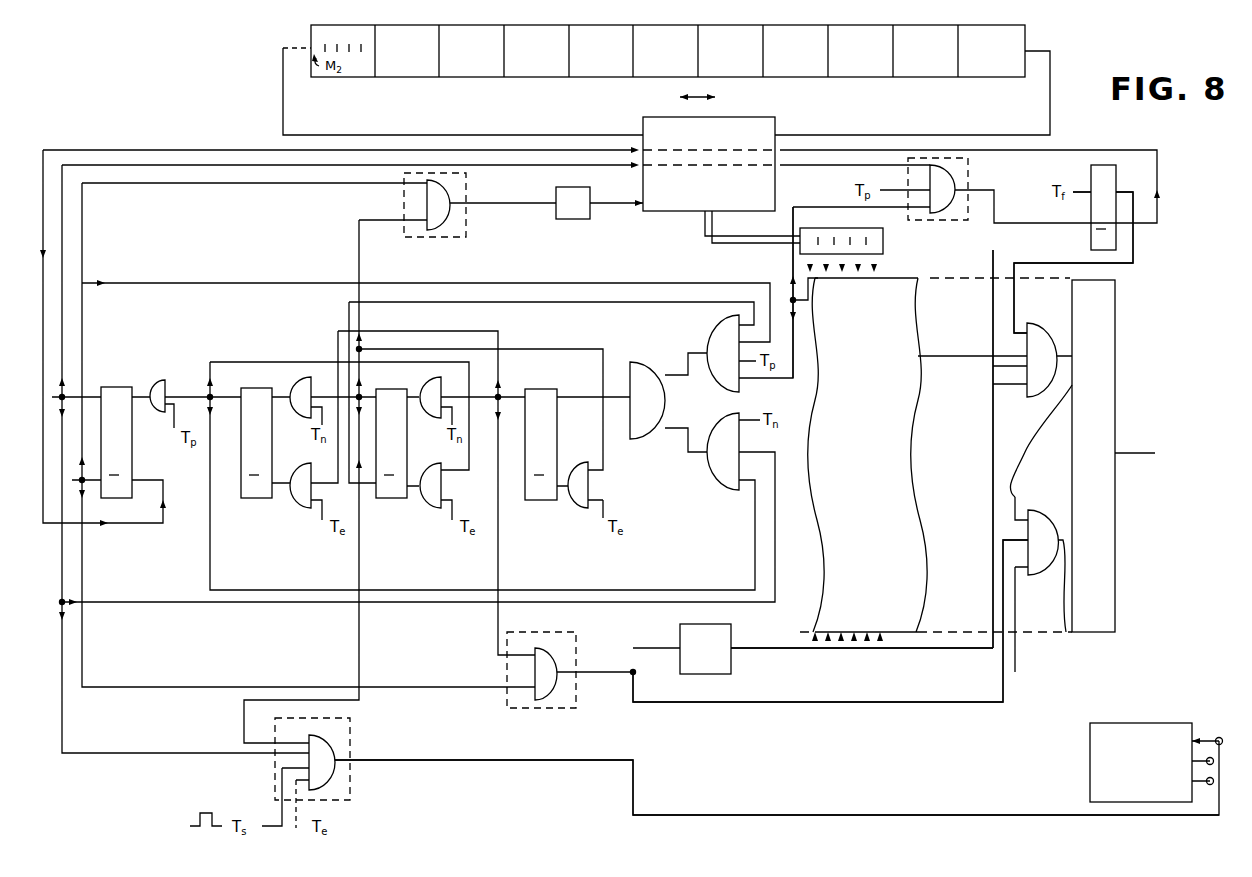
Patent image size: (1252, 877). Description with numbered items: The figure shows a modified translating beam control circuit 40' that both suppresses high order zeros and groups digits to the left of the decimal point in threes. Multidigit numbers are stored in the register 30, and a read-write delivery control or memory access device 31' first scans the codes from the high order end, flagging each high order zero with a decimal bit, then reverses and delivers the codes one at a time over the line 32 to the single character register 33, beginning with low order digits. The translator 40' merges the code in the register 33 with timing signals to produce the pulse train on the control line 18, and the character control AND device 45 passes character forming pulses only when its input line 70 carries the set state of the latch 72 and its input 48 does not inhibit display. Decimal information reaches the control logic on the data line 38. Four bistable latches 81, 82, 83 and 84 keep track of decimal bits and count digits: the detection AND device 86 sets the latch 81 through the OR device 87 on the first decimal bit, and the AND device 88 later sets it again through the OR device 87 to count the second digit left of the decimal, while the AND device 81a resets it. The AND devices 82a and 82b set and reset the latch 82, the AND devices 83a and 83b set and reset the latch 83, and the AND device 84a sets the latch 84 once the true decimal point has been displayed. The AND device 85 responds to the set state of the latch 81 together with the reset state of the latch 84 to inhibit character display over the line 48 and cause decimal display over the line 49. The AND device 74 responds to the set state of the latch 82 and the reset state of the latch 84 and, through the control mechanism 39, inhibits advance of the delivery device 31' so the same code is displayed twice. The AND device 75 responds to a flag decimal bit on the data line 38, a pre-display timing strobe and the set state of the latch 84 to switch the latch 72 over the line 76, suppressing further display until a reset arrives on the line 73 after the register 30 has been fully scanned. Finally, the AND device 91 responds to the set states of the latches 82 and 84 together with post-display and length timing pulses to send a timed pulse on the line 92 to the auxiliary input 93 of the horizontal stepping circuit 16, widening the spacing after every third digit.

The register 30 is at (1027, 25).
The read-write delivery control or memory access device 31' is at (731, 151).
The line 32 is at (704, 236).
The single character storage device or register 33 is at (846, 228).
The data line 38 is at (793, 365).
The control mechanism 39 is at (573, 203).
The modified translating beam control circuit 40' is at (985, 455).
The character control AND device 45 is at (1035, 323).
The input line 48 is at (776, 648).
The input line 49 is at (1003, 606).
The input line 70 is at (1133, 243).
The bistable latch 72 is at (1108, 165).
The input line 73 is at (1087, 188).
The AND device 74 is at (449, 222).
The AND device 75 is at (950, 208).
The line 76 is at (972, 190).
The bistable latch 81 is at (541, 389).
The AND device 81a is at (568, 502).
The bistable latch 82 is at (385, 389).
The AND device 82a is at (430, 418).
The AND device 82b is at (422, 505).
The bistable latch 83 is at (258, 388).
The AND device 83a is at (300, 418).
The AND device 83b is at (292, 505).
The bistable latch 84 is at (118, 387).
The AND device 84a is at (155, 412).
The AND device 85 is at (553, 694).
The detection AND device 86 is at (712, 383).
The OR device 87 is at (655, 436).
The AND device 88 is at (724, 488).
The AND device 91 is at (326, 782).
The line 92 is at (557, 760).
The auxiliary input 93 is at (1222, 735).
The control line 18 is at (1115, 453).
The step generating circuit 16 is at (1141, 762).